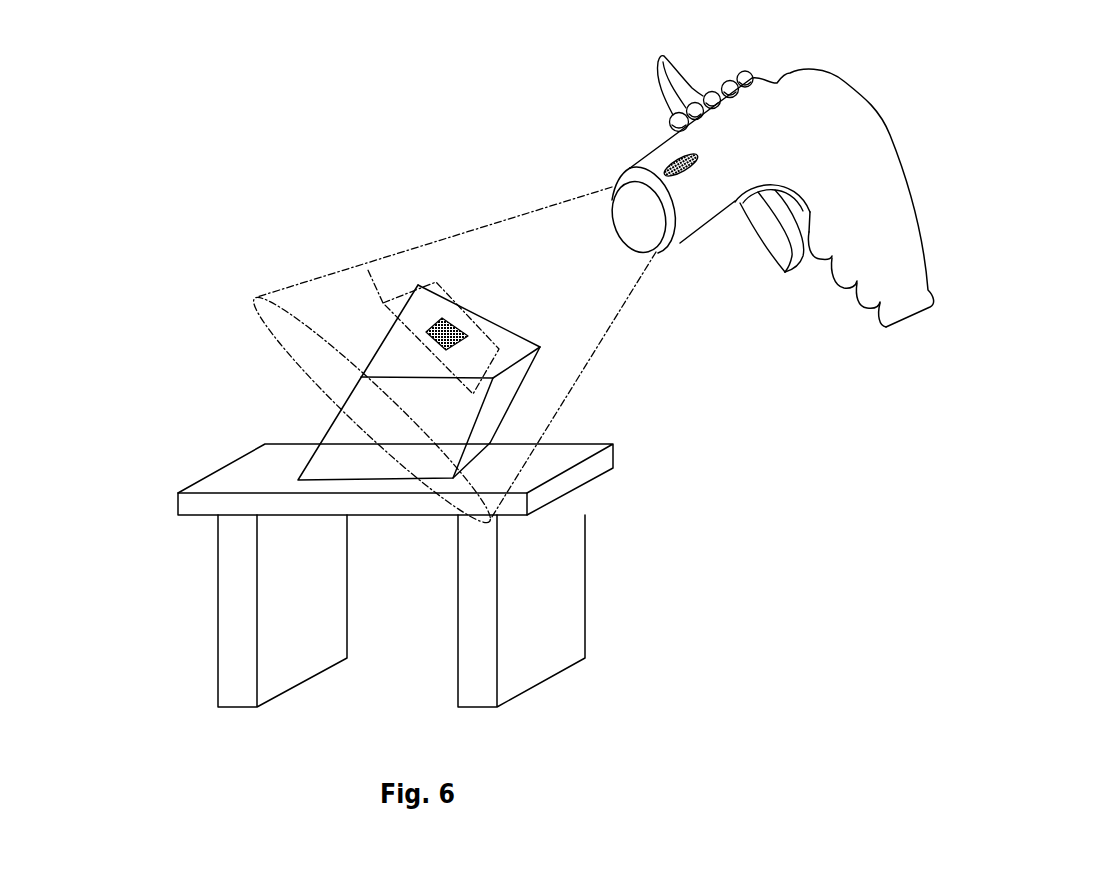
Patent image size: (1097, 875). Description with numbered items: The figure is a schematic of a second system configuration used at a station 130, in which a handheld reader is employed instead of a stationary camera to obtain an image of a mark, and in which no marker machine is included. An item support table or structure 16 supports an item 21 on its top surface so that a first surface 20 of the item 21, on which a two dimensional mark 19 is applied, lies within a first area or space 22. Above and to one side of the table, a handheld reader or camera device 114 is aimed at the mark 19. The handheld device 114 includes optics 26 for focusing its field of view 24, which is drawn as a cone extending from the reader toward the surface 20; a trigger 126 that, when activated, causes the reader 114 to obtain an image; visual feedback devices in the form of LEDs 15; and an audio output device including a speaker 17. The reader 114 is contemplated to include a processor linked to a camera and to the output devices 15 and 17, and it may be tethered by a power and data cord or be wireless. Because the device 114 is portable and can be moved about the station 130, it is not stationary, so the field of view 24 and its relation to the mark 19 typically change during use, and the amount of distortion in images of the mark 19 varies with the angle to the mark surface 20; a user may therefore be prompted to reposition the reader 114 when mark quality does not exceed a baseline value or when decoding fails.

The station 130 is at (390, 180).
The handheld reader or camera device 114 is at (802, 140).
The optics 26 is at (630, 207).
The speaker 17 is at (678, 157).
The LEDs 15 is at (680, 72).
The trigger 126 is at (808, 224).
The field of view 24 is at (620, 312).
The item support table or structure 16 is at (270, 482).
The item 21 is at (350, 445).
The mark 19 is at (525, 375).
The first area or space 22 is at (468, 331).
The first surface 20 is at (423, 327).